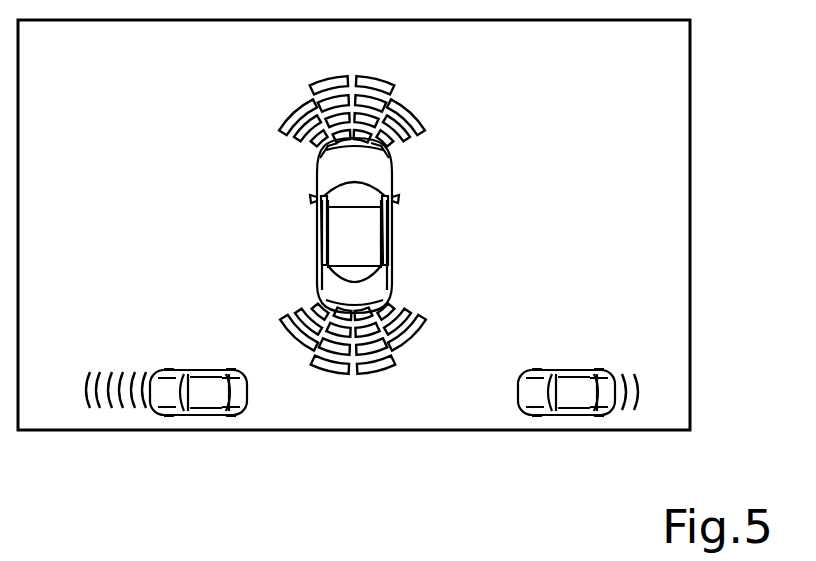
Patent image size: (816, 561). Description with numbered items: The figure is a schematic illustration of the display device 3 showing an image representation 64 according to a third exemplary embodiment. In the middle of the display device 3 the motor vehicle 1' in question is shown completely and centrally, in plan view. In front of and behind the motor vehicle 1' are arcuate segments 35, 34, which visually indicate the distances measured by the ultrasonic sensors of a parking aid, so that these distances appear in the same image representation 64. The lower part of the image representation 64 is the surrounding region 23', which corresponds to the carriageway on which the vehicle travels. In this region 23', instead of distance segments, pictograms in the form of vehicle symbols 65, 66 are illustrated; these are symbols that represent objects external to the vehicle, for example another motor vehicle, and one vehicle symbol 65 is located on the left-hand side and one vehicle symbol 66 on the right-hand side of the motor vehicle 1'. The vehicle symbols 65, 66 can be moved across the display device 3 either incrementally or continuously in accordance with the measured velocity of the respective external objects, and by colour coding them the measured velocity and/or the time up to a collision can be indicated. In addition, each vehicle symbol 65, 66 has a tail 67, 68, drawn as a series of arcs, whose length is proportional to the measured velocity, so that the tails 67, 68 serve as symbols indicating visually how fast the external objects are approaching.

The display device 3 is at (690, 75).
The image representation 64 is at (668, 153).
The motor vehicle 1' is at (395, 225).
The arcuate segment 35 is at (436, 154).
The arcuate segment 34 is at (430, 300).
The surrounding region 23' is at (79, 302).
The tail 67 is at (108, 430).
The vehicle symbol 65 is at (200, 395).
The vehicle symbol 66 is at (568, 395).
The tail 68 is at (631, 432).